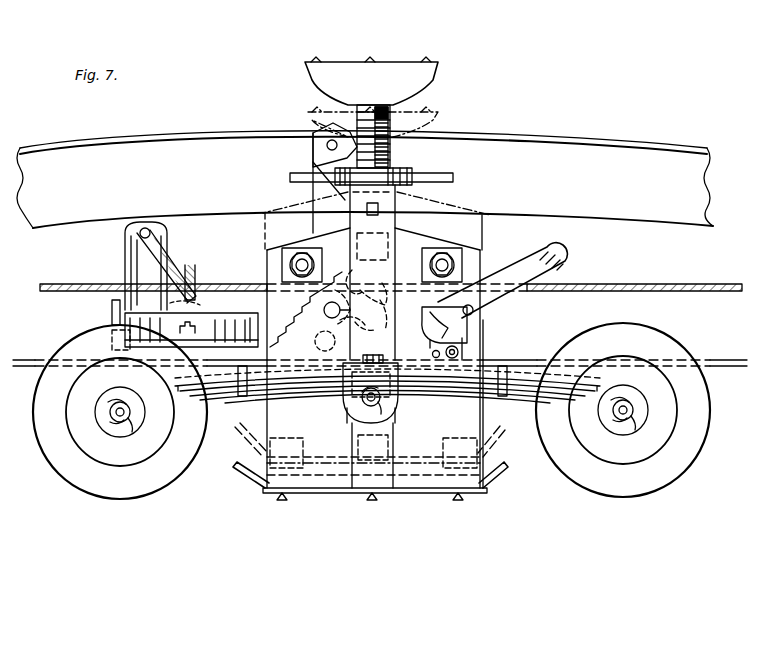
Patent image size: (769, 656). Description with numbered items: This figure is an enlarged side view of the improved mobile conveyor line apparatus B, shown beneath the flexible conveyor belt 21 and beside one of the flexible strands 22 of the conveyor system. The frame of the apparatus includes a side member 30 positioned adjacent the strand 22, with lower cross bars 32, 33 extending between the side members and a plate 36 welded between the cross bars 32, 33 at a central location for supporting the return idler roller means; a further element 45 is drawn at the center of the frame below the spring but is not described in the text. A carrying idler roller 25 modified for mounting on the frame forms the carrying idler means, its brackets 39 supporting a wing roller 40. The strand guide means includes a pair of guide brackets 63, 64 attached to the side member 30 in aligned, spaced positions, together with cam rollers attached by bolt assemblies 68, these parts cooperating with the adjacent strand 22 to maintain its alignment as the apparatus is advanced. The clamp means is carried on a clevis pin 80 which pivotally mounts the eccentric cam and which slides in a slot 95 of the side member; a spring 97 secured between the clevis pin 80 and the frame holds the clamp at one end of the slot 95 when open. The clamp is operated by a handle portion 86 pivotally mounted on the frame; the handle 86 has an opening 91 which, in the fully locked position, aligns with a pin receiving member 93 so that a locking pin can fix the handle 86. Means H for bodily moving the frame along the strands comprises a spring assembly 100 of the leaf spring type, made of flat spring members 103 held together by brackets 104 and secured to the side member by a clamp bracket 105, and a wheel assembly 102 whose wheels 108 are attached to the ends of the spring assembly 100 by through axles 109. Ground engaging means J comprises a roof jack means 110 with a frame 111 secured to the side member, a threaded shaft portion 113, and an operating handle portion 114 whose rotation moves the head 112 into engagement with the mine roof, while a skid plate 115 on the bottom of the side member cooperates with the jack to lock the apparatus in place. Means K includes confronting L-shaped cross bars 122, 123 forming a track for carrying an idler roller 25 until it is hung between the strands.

The flexible conveyor belt 21 is at (608, 153).
The flexible strands 22 is at (75, 287).
The carrying idler roller 25 is at (160, 255).
The side member 30 is at (272, 410).
The lower cross bar 32 is at (473, 432).
The lower cross bar 33 is at (300, 437).
The plate 36 is at (413, 477).
The bracket 39 is at (330, 153).
The wing roller 40 is at (318, 227).
The center guide 45 is at (390, 438).
The guide bracket 63 is at (482, 256).
The guide bracket 64 is at (267, 258).
The bolt assembly 68 is at (318, 260).
The clevis pin 80 is at (324, 310).
The handle portion 86 is at (563, 262).
The opening 91 is at (483, 318).
The pin receiving member 93 is at (462, 351).
The slot 95 is at (361, 300).
The spring 97 is at (315, 343).
The spring assembly 100 is at (326, 400).
The wheel assembly 102 is at (20, 404).
The elongated flat spring member 103 is at (465, 382).
The bracket 104 is at (490, 397).
The clamp bracket 105 is at (398, 413).
The wheel 108 is at (120, 483).
The through axle 109 is at (110, 420).
The roof jack means 110 is at (320, 96).
The frame 111 is at (353, 425).
The head 112 is at (394, 70).
The threaded shaft portion 113 is at (385, 98).
The operating handle portion 114 is at (453, 178).
The skid plate 115 is at (495, 443).
The L-shaped cross bar 122 is at (115, 317).
The L-shaped cross bar 123 is at (243, 328).
The mobile conveyor line apparatus B is at (266, 97).
The ground engaging means J is at (459, 79).
The means for facilitating mounting of carrying idler rollers K is at (67, 311).
The means for enabling bodily movement of the frame H is at (50, 484).